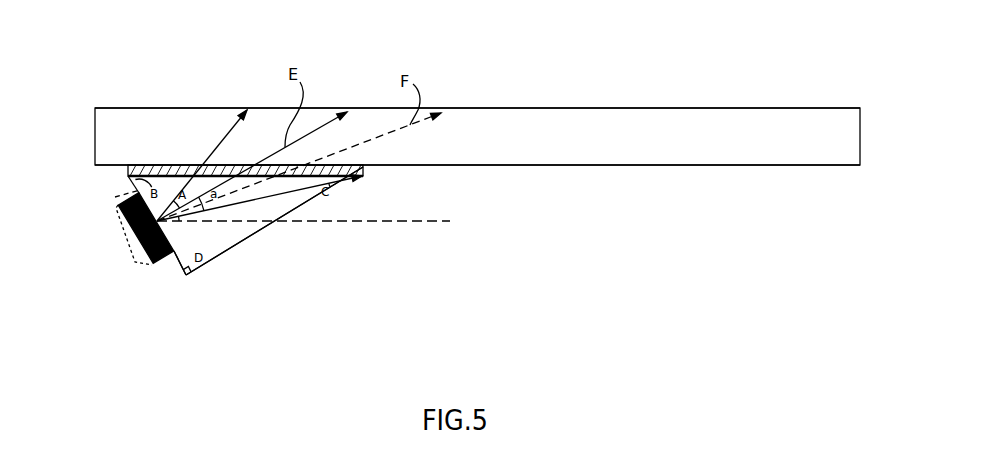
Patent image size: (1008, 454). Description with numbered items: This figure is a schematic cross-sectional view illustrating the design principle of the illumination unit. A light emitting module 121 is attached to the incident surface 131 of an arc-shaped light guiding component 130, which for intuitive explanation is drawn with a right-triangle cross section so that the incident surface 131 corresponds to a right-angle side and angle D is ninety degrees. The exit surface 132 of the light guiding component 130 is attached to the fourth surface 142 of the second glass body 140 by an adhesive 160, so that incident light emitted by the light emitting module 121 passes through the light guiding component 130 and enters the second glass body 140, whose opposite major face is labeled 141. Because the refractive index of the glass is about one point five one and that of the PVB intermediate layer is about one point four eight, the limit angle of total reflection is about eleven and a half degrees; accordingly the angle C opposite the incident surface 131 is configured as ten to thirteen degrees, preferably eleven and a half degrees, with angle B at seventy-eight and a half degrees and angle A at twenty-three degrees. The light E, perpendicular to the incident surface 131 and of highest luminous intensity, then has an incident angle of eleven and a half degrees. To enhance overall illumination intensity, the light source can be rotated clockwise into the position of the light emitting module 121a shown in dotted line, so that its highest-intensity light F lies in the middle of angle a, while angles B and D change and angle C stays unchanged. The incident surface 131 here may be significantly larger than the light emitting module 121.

The light emitting module 121 is at (165, 258).
The light emitting module 121a is at (128, 243).
The arc-shaped light guiding component 130 is at (248, 237).
The incident surface 131 is at (173, 264).
The exit surface 132 is at (290, 173).
The second glass body 140 is at (758, 142).
The top surface 141 is at (658, 108).
The fourth surface 142 is at (647, 165).
The adhesive 160 is at (364, 168).